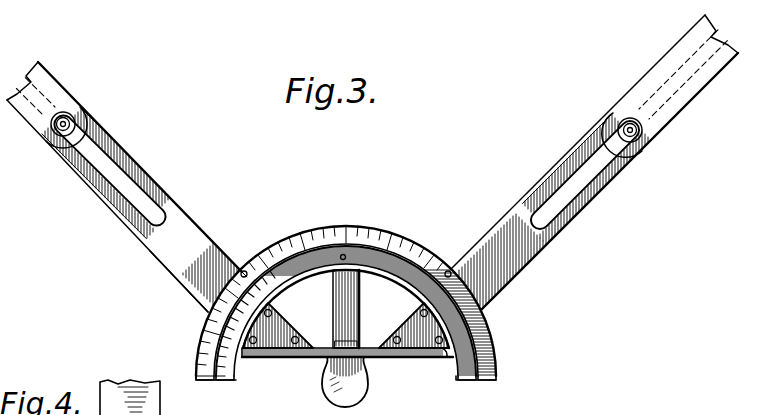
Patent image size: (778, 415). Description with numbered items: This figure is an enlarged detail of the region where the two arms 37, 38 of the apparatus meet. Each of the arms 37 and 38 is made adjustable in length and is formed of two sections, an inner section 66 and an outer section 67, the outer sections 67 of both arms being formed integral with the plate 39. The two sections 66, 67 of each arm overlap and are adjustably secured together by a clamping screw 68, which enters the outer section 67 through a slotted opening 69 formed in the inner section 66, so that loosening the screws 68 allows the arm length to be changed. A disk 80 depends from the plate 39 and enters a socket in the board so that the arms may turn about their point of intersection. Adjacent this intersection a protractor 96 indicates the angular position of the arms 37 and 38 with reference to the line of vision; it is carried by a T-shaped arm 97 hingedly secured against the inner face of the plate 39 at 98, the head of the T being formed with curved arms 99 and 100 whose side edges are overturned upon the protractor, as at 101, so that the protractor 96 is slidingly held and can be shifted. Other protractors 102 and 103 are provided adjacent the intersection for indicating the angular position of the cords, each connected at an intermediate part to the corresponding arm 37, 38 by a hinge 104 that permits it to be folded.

The arm 37 is at (181, 207).
The arm 38 is at (533, 195).
The plate 39 is at (283, 358).
The inner section 66 is at (103, 192).
The outer section 67 is at (165, 261).
The clamping screw 68 is at (54, 133).
The slotted opening 69 is at (102, 162).
The disk 80 is at (365, 386).
The protractor 96 is at (467, 380).
The arm 97 is at (359, 337).
The hinge 98 is at (333, 337).
The curved arm 99 is at (303, 247).
The curved arm 100 is at (383, 275).
The overturned side edge 101 is at (313, 275).
The protractor 102 is at (203, 331).
The protractor 103 is at (494, 349).
The hinge 104 is at (244, 270).